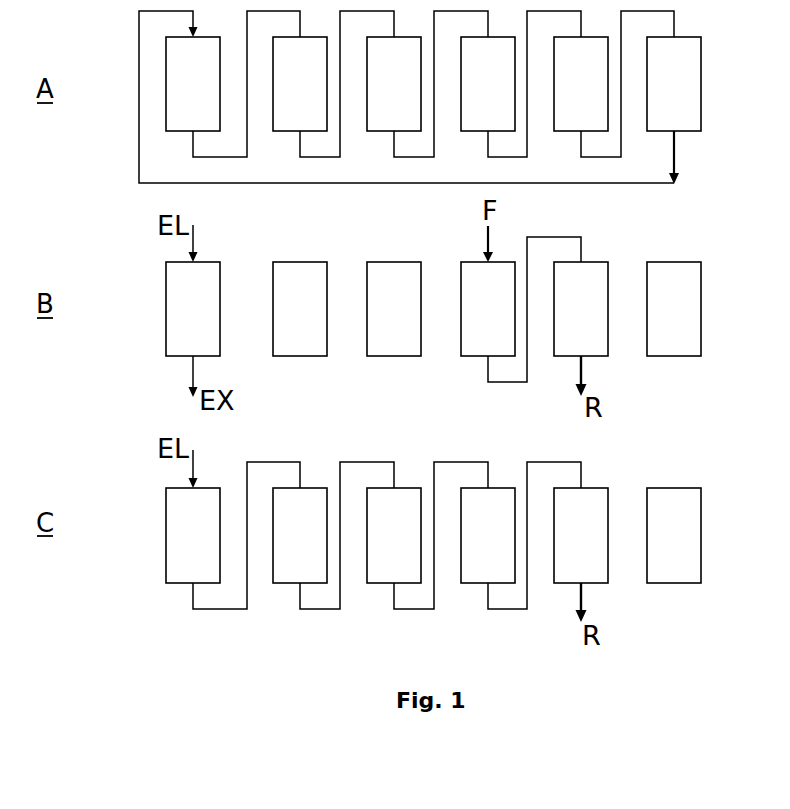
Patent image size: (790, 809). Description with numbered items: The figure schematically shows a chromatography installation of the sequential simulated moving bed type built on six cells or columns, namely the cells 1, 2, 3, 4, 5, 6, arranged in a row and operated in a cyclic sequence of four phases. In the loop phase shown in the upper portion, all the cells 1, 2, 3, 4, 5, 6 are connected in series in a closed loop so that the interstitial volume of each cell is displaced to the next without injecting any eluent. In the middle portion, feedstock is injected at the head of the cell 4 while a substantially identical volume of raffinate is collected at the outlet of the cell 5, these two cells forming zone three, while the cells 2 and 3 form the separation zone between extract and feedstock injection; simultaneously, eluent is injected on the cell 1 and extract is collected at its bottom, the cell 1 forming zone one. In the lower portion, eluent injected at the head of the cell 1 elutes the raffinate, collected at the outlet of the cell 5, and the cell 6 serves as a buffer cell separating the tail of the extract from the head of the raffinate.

The cell 1 is at (193, 310).
The cell 2 is at (300, 310).
The cell 3 is at (394, 310).
The cell 4 is at (488, 310).
The cell 5 is at (581, 310).
The cell 6 is at (674, 310).